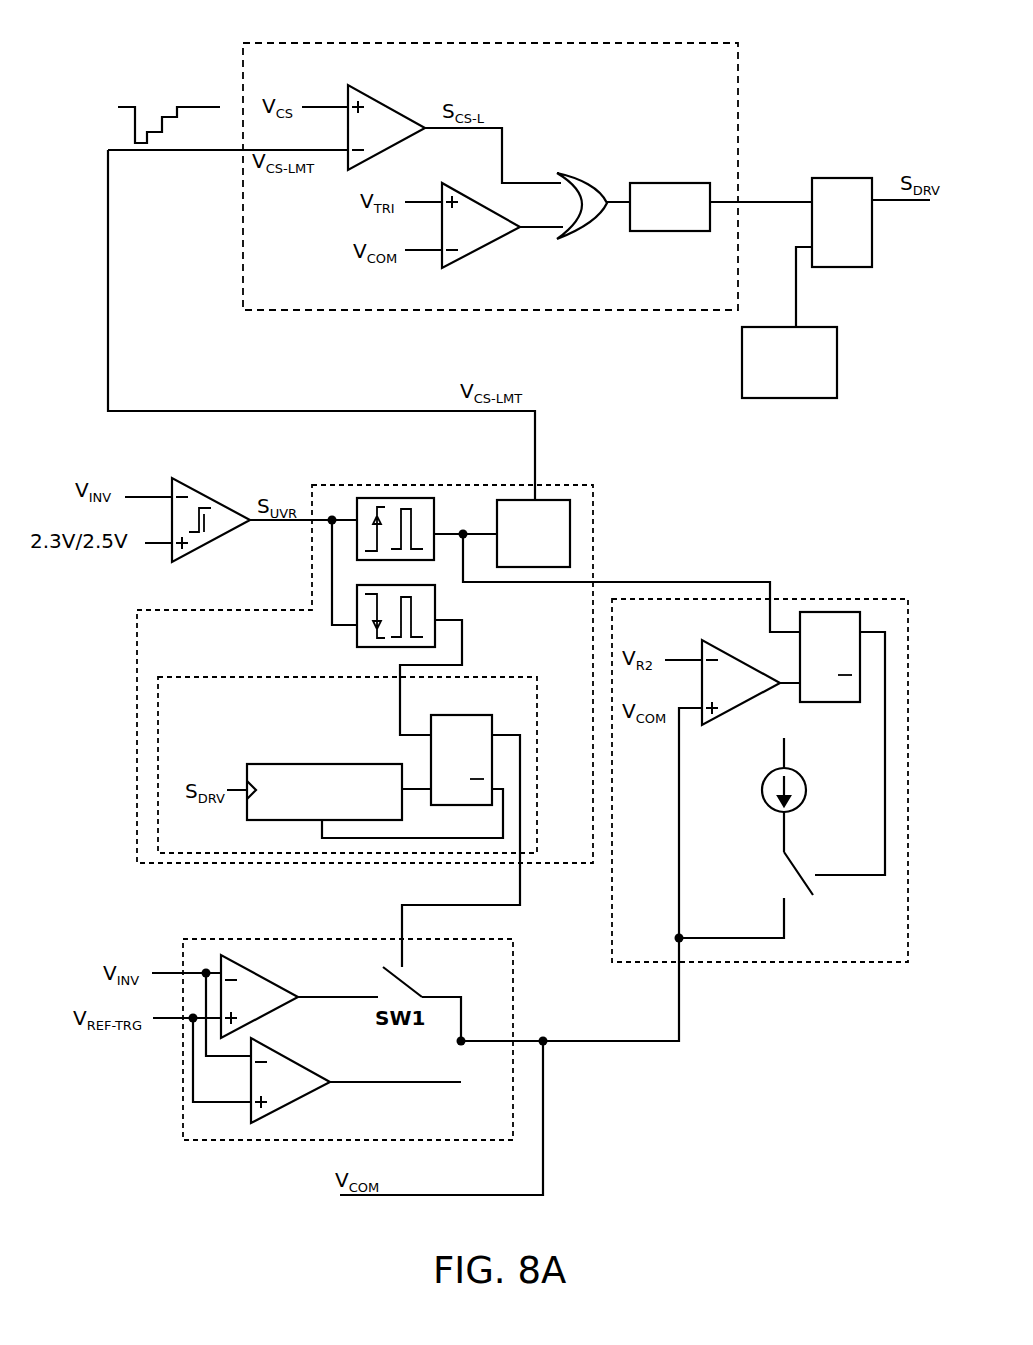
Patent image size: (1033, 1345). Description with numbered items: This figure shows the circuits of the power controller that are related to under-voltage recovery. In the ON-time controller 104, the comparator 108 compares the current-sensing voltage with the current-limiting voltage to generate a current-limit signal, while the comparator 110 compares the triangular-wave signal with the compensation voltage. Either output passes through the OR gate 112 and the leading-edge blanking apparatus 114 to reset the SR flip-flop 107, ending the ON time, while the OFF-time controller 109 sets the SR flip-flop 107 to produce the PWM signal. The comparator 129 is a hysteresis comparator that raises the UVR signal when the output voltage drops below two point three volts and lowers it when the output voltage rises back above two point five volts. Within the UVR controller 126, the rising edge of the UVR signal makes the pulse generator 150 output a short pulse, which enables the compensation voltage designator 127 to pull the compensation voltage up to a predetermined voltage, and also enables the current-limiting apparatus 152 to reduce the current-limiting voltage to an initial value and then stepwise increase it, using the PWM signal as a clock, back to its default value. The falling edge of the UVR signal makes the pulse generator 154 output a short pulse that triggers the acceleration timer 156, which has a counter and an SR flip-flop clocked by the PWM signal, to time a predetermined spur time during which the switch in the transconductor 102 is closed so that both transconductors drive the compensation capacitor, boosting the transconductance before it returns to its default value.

The transconductor 102 is at (302, 939).
The ON-time controller 104 is at (425, 43).
The SR flip-flop 107 is at (835, 178).
The comparator 108 is at (388, 105).
The OFF-time controller 109 is at (789, 362).
The comparator 110 is at (478, 248).
The OR gate 112 is at (585, 173).
The leading-edge blanking apparatus 114 is at (663, 183).
The UVR controller 126 is at (390, 485).
The compensation voltage designator 127 is at (797, 599).
The comparator 129 is at (210, 495).
The pulse generator 150 is at (434, 523).
The current-limiting apparatus 152 is at (533, 533).
The pulse generator 154 is at (357, 628).
The acceleration timer 156 is at (202, 677).